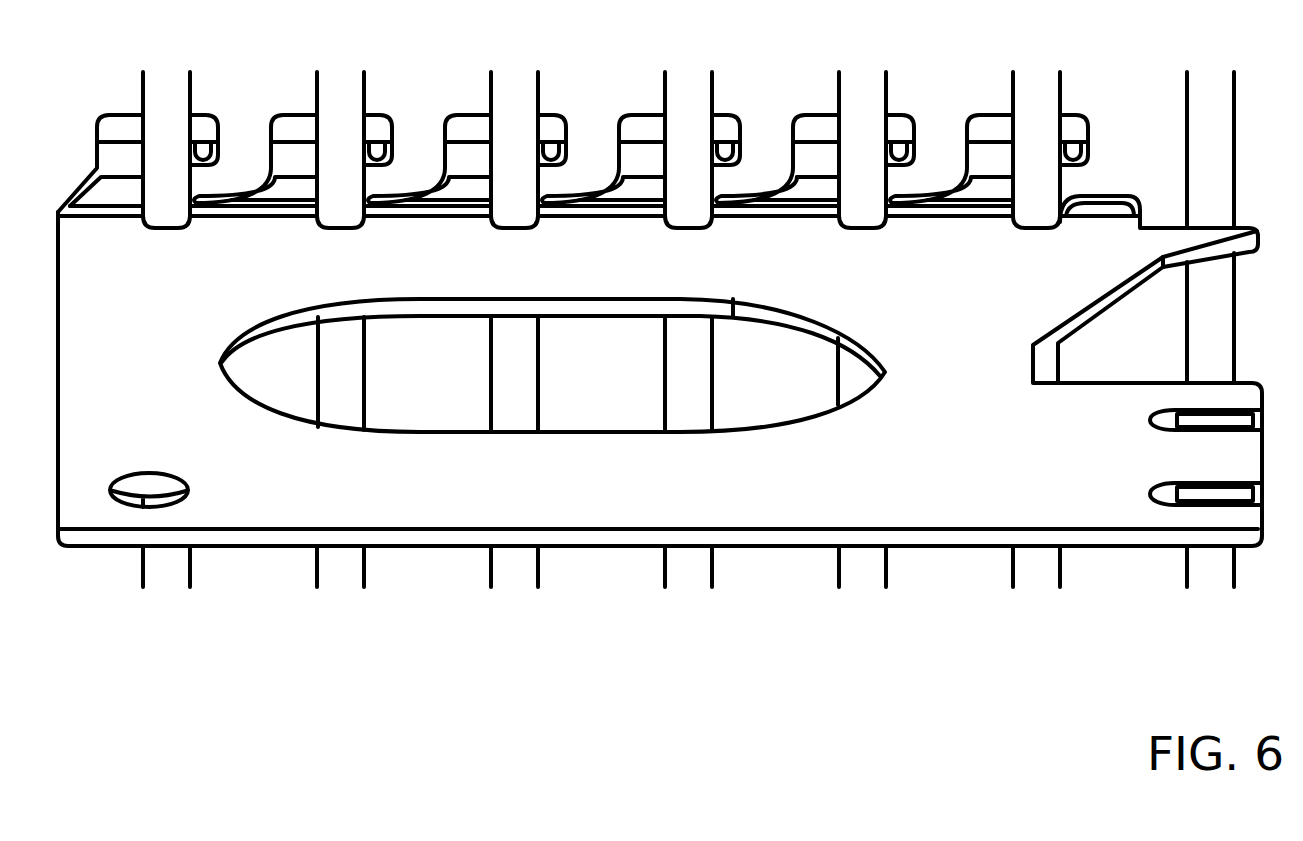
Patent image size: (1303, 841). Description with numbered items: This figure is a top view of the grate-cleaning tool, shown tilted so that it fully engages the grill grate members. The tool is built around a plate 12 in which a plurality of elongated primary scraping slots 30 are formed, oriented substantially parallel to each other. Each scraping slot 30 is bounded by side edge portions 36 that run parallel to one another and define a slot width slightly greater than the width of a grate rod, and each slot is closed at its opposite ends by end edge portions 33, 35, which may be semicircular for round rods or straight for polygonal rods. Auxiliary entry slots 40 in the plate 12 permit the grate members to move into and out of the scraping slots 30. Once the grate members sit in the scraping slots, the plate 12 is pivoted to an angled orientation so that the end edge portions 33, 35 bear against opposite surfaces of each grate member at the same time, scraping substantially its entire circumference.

The plate 12 is at (950, 502).
The primary scraping slot 30 is at (998, 161).
The end edge portion 33 is at (1040, 234).
The end edge portion 35 is at (835, 165).
The side edge portion 36 is at (828, 162).
The auxiliary entry slot 40 is at (937, 133).